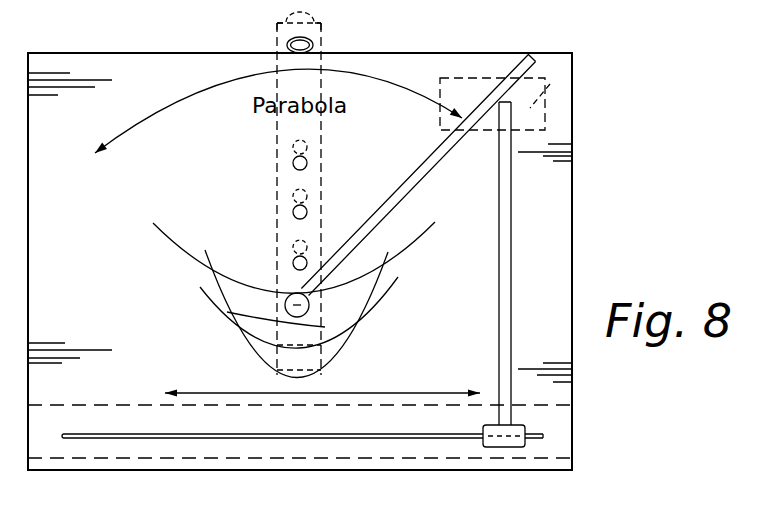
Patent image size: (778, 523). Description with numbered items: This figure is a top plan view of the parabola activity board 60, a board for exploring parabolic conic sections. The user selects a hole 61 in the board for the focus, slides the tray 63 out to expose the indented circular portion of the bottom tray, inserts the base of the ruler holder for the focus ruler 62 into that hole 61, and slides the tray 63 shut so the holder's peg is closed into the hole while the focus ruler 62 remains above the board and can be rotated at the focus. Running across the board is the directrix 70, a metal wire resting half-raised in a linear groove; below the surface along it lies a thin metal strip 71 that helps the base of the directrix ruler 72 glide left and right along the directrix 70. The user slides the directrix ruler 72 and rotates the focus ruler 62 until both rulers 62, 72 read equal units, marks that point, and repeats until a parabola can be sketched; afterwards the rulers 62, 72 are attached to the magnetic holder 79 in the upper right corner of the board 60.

The parabola activity board 60 is at (492, 44).
The hole 61 is at (286, 302).
The focus ruler 62 is at (452, 143).
The tray 63 is at (320, 34).
The directrix 70 is at (142, 438).
The thin metal strip 71 is at (549, 446).
The directrix ruler 72 is at (499, 312).
The magnetic holder 79 is at (550, 84).